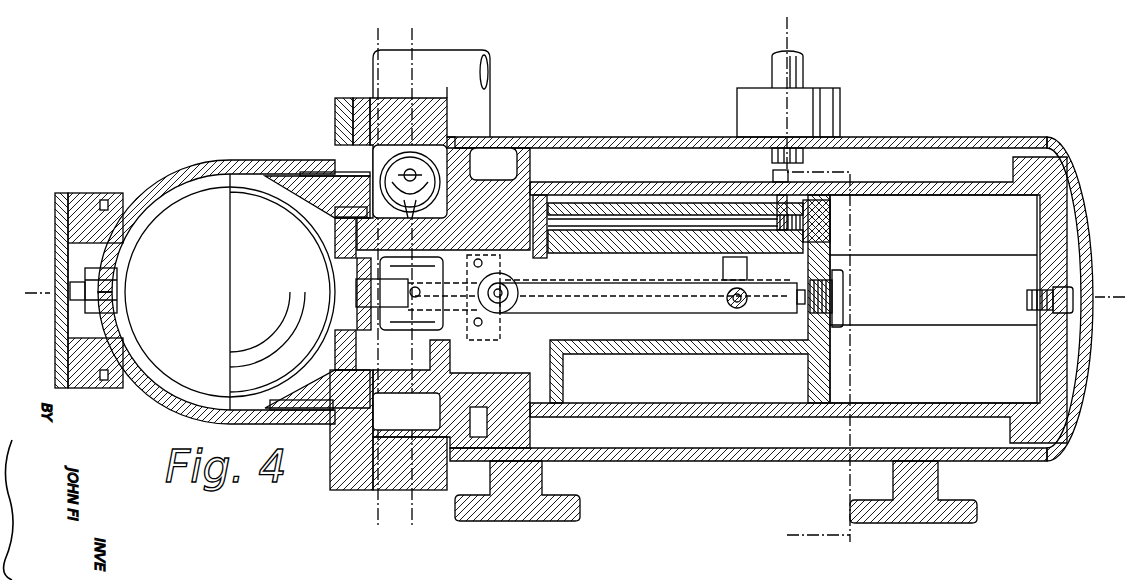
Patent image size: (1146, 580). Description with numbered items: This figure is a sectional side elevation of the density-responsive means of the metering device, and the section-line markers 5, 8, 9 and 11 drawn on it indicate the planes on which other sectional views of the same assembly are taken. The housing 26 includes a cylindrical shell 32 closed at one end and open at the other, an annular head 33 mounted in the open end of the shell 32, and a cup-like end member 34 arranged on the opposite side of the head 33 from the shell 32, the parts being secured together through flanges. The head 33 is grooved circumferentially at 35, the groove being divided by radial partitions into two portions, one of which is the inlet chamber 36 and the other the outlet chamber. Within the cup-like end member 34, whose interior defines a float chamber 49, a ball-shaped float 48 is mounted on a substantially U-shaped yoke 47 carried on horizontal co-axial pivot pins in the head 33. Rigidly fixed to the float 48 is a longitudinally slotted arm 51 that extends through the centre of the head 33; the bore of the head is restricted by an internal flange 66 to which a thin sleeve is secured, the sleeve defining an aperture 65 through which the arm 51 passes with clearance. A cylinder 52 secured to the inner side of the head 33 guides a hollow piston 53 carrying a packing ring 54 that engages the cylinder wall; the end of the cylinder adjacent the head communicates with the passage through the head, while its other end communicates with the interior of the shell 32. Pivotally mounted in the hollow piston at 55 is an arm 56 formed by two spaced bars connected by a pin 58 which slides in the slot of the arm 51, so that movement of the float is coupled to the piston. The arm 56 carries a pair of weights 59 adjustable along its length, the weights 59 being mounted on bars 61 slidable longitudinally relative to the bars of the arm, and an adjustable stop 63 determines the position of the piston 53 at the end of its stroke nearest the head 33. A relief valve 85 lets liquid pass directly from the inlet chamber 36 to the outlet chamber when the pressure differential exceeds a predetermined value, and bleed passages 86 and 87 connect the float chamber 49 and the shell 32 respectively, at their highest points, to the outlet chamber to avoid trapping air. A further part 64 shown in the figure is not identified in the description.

The section line 5- 5 is at (25, 294).
The section line 8- 8 is at (412, 32).
The section line 9- 9 is at (348, 32).
The section line 11- 11 is at (755, 35).
The housing 26 is at (940, 136).
The cylindrical shell 32 is at (662, 136).
The annular head 33 is at (474, 432).
The cup-like end member 34 is at (277, 158).
The circumferential groove 35 is at (345, 441).
The inlet chamber 36 is at (390, 412).
The U-shaped yoke 47 is at (357, 263).
The ball-shaped float 48 is at (197, 262).
The float chamber 49 is at (160, 384).
The slotted arm 51 is at (453, 312).
The cylinder 52 is at (795, 412).
The piston 53 is at (700, 355).
The packing ring 54 is at (563, 192).
The pivot 55 is at (746, 308).
The arm 56 is at (697, 305).
The pin 58 is at (414, 298).
The weights 59 is at (507, 314).
The bars 61 is at (662, 302).
The adjustable stop 63 is at (539, 220).
The gasket 64 is at (350, 170).
The aperture 65 is at (441, 262).
The internal flange 66 is at (432, 352).
The relief valve 85 is at (335, 211).
The bleed passage 86 is at (340, 150).
The bleed passage 87 is at (498, 138).